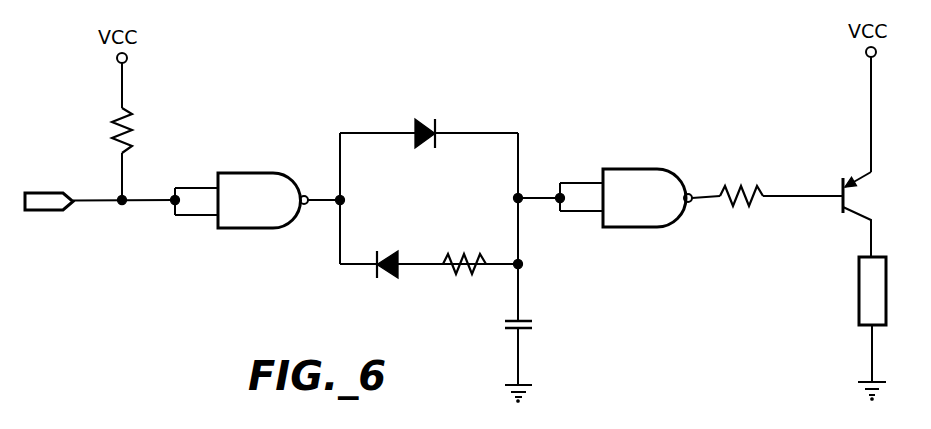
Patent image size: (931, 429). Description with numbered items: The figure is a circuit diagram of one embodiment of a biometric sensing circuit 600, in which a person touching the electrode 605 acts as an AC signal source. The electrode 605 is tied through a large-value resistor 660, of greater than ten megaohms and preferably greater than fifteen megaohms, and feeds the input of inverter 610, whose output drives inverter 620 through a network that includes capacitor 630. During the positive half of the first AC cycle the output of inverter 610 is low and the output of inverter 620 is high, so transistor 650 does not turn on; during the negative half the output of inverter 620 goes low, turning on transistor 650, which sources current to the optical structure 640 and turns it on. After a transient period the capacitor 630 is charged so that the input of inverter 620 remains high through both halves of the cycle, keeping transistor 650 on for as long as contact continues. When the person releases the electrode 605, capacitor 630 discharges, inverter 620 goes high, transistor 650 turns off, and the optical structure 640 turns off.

The biometric sensing circuit 600 is at (561, 56).
The electrode 605 is at (43, 211).
The inverter 610 is at (259, 231).
The inverter 620 is at (654, 229).
The capacitor 630 is at (532, 322).
The optical structure 640 is at (858, 282).
The transistor 650 is at (841, 184).
The resistor 660 is at (132, 128).